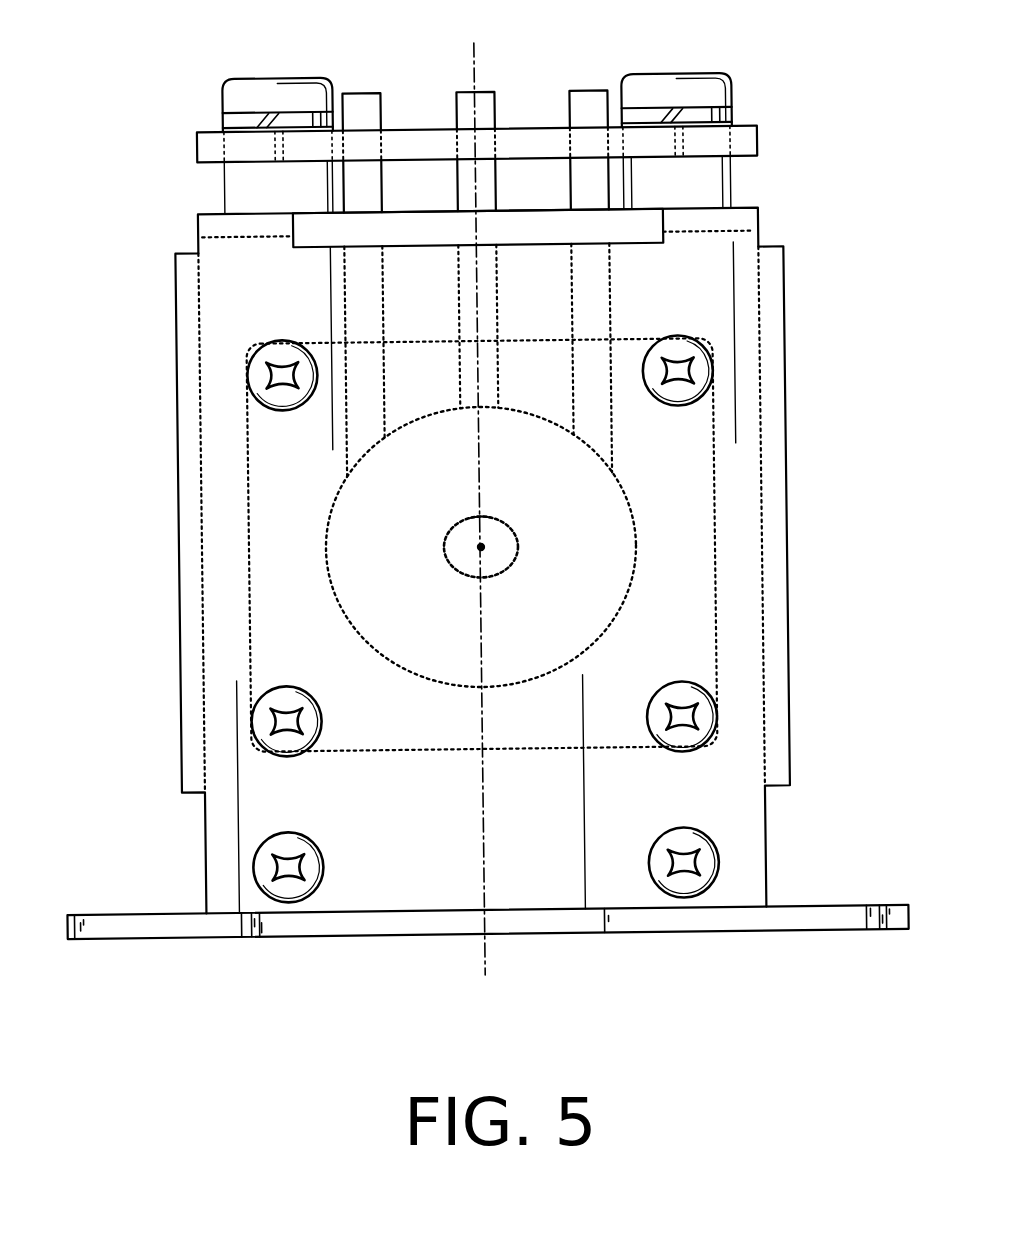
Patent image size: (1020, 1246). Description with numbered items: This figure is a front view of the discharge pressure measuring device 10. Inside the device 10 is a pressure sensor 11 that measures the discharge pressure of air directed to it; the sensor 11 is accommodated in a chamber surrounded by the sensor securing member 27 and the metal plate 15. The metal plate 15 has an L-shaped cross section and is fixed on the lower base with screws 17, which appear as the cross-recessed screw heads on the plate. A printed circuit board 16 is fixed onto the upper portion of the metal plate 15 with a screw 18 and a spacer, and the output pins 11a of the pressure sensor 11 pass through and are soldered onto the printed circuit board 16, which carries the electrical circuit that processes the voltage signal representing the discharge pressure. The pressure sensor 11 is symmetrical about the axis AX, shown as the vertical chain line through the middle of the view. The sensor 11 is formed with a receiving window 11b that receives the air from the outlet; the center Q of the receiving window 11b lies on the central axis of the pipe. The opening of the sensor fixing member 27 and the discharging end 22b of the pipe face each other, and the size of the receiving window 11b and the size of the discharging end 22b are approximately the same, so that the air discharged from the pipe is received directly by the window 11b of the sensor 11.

The discharge pressure measuring device 10 is at (153, 184).
The pressure sensor 11 is at (630, 492).
The output pins 11a is at (455, 102).
The receiving window 11b is at (446, 549).
The metal plate 15 is at (709, 803).
The printed circuit board 16 is at (225, 142).
The screws 17 is at (297, 889).
The screw 18 is at (278, 88).
The discharging end 22b is at (488, 518).
The sensor securing member 27 is at (760, 533).
The axis AX is at (478, 490).
The center Q is at (485, 550).